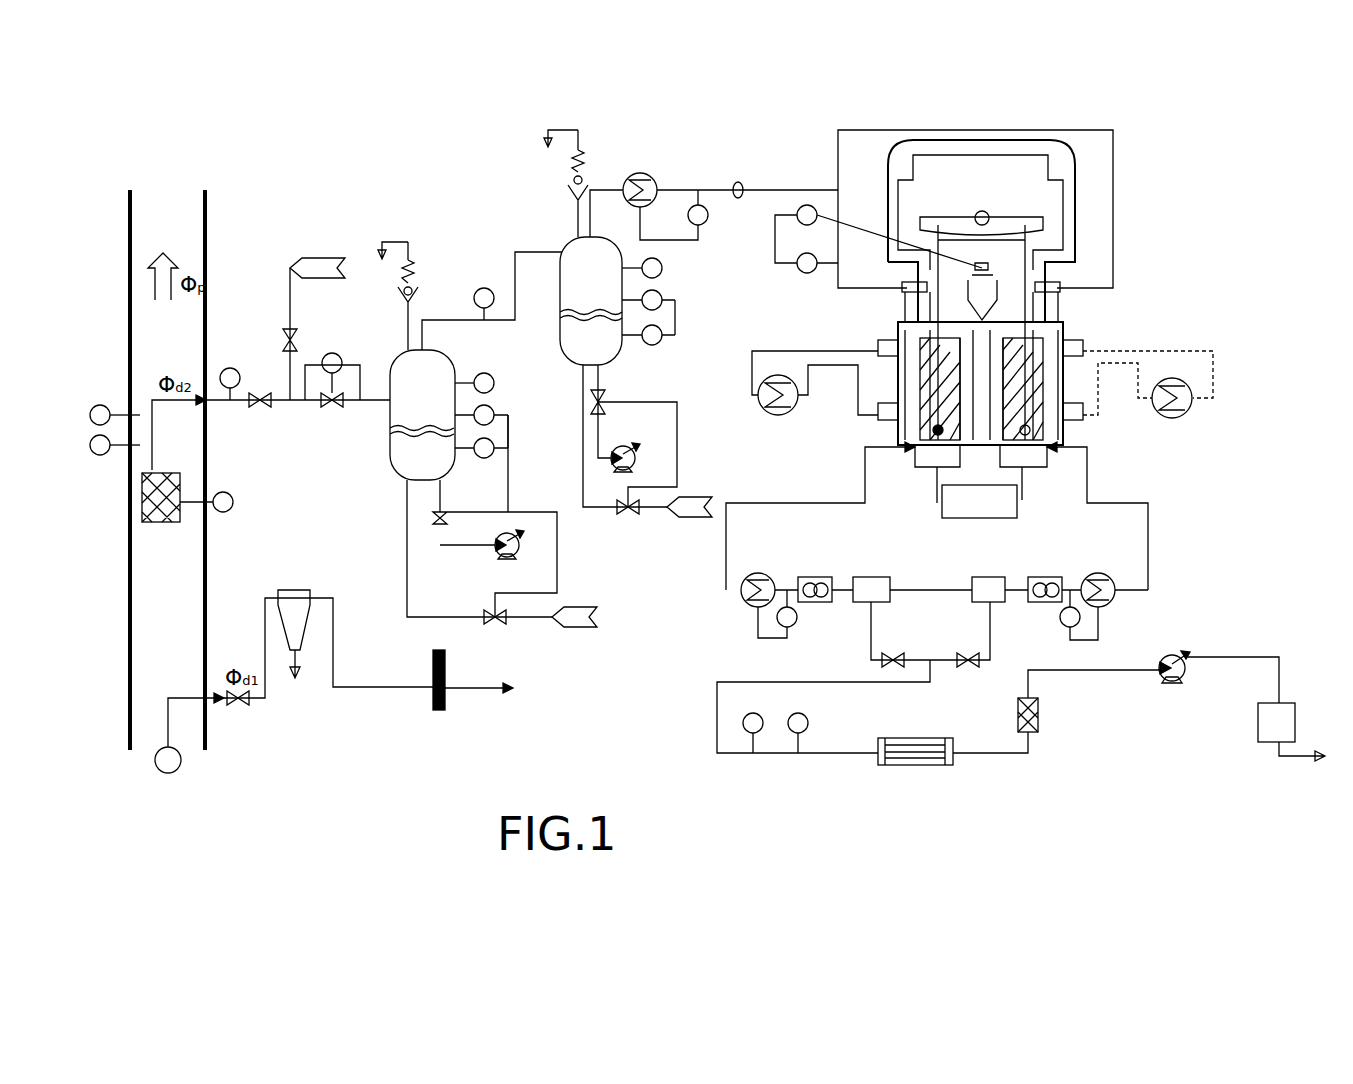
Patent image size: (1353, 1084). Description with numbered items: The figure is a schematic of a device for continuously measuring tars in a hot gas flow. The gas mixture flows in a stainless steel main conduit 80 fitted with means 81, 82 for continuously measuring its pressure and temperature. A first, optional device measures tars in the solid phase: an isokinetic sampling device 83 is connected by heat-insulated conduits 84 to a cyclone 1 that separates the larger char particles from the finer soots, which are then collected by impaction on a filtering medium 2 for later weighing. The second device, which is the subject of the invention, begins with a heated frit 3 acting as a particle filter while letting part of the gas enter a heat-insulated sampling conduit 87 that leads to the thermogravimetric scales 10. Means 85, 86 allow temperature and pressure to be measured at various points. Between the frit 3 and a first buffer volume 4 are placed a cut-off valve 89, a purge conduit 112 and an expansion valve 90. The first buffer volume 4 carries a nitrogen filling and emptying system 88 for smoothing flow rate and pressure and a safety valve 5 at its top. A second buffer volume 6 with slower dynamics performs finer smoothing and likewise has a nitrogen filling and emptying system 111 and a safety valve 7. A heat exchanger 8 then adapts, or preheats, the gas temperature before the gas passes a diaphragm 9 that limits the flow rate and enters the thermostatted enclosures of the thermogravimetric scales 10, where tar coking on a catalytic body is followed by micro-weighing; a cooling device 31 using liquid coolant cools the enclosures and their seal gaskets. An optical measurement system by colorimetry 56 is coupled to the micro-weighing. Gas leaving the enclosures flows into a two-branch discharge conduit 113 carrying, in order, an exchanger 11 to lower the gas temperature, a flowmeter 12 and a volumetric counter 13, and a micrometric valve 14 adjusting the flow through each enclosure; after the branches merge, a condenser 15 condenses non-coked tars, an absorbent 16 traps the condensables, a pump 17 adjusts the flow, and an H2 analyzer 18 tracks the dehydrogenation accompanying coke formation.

The cyclone 1 is at (295, 590).
The filtering medium 2 is at (433, 675).
The frit 3 is at (150, 513).
The first buffer volume 4 is at (395, 385).
The safety valve 5 is at (412, 265).
The second buffer volume 6 is at (563, 270).
The safety valve 7 is at (570, 170).
The heat exchanger 8 is at (645, 175).
The diaphragm 9 is at (740, 182).
The thermogravimetric scales 10 is at (1142, 216).
The exchanger 11 is at (765, 575).
The flowmeter 12 is at (818, 577).
The volumetric counter 13 is at (873, 585).
The micrometric valve 14 is at (960, 652).
The condenser 15 is at (918, 765).
The absorbent 16 is at (1038, 715).
The pump 17 is at (1180, 655).
The H2 analyzer 18 is at (1288, 712).
The cooling device 31 is at (757, 418).
The optical measurement system by colorimetry 56 is at (1030, 512).
The main conduit 80 is at (130, 272).
The pressure measurement means 81 is at (90, 416).
The temperature measurement means 82 is at (94, 456).
The isokinetic sampling device 83 is at (157, 762).
The conduits 84 is at (333, 690).
The temperature measurement means 85 is at (232, 368).
The pressure measurement means 86 is at (338, 350).
The sampling conduit 87 is at (300, 405).
The nitrogen filling and emptying system 88 is at (597, 527).
The cut-off valve 89 is at (258, 392).
The expansion valve 90 is at (328, 360).
The nitrogen filling and emptying system 111 is at (640, 423).
The purge conduit 112 is at (290, 268).
The discharge conduit 113 is at (1135, 700).